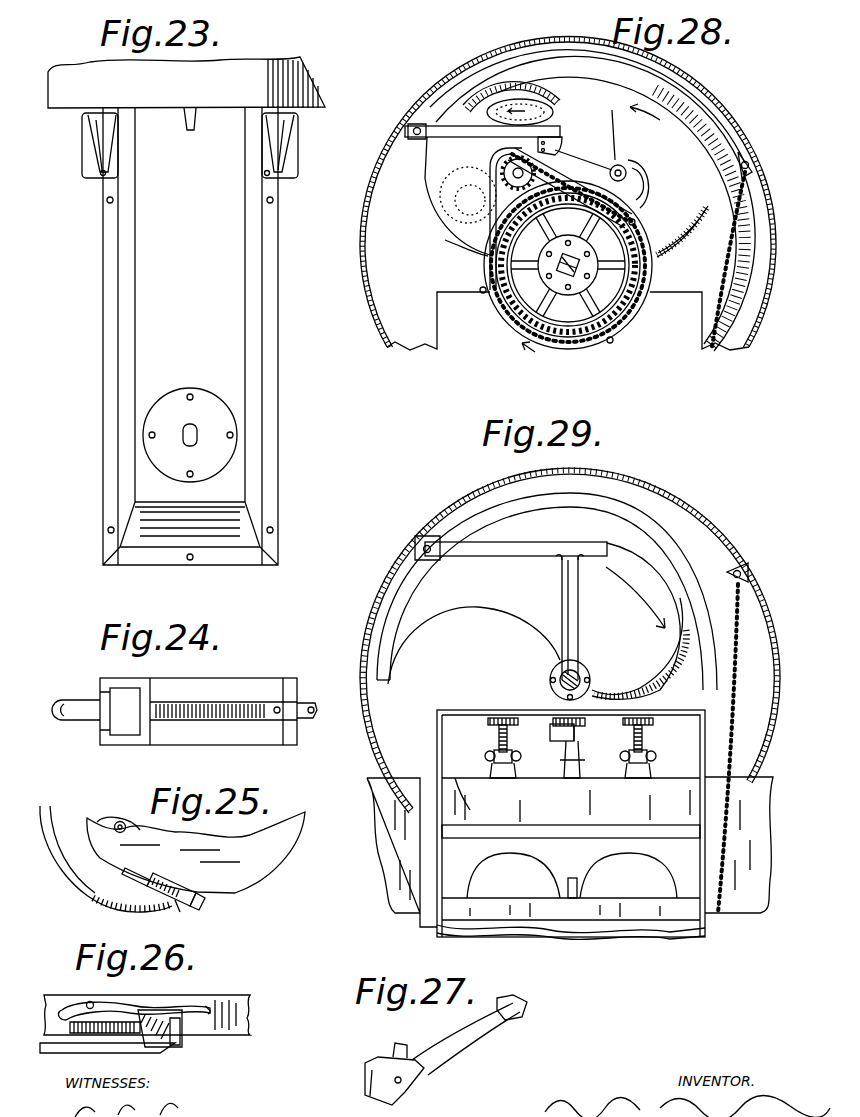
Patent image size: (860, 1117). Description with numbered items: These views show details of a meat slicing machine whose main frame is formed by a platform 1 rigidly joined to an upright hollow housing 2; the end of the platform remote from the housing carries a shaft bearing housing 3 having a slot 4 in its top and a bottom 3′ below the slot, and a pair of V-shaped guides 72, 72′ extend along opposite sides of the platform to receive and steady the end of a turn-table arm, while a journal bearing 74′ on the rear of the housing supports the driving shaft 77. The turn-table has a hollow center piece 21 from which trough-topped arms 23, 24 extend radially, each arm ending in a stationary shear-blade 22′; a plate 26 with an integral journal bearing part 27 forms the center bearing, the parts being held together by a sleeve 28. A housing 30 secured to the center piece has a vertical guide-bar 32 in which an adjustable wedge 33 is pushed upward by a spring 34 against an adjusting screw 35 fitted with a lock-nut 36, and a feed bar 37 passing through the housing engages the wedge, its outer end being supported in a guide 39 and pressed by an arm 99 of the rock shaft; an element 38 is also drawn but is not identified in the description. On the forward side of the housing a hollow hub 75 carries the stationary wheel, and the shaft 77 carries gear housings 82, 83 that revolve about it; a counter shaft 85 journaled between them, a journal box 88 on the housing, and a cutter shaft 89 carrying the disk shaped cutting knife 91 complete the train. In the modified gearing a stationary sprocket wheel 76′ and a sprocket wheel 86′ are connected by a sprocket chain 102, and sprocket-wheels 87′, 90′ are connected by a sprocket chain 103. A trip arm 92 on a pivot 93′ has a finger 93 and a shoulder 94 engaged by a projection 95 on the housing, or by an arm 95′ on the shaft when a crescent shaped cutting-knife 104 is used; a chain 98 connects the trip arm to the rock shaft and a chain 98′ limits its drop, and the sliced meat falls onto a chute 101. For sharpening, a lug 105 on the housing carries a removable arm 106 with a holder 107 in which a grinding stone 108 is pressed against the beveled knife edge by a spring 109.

In FIG. 23, the platform 1 is at (160, 310).
In FIG. 23, the upright hollow housing 2 is at (83, 82).
In FIG. 28, the upright hollow housing 2 is at (450, 82).
In FIG. 29, the upright hollow housing 2 is at (466, 495).
In FIG. 23, the shaft bearing housing 3 is at (165, 418).
In FIG. 23, the bottom 3′ is at (185, 442).
In FIG. 23, the slot 4 is at (197, 440).
In FIG. 23, the V-shaped guide 72 is at (292, 125).
In FIG. 23, the V-shaped guide 72′ is at (86, 125).
In FIG. 23, the journal bearing 74′ is at (193, 131).
In FIG. 24, the housing 30 is at (200, 680).
In FIG. 24, the vertical guide-bar 32 is at (122, 745).
In FIG. 24, the adjustable wedge 33 is at (108, 700).
In FIG. 24, the spring 34 is at (165, 722).
In FIG. 24, the feed bar 37 is at (313, 706).
In FIG. 24, the rod 38 is at (60, 710).
In FIG. 25, the gear housing 83 is at (265, 878).
In FIG. 26, the gear housing 83 is at (246, 1008).
In FIG. 28, the gear housing 83 is at (438, 213).
In FIG. 25, the disk shaped cutting knife 91 is at (70, 893).
In FIG. 26, the disk shaped cutting knife 91 is at (120, 1052).
In FIG. 28, the disk shaped cutting knife 91 is at (685, 128).
In FIG. 25, the journal box 88 is at (115, 823).
In FIG. 28, the journal box 88 is at (645, 183).
In FIG. 25, the cutter shaft 89 is at (132, 832).
In FIG. 28, the cutter shaft 89 is at (626, 170).
In FIG. 25, the lug 105 is at (150, 880).
In FIG. 26, the lug 105 is at (90, 1030).
In FIG. 25, the holder 107 is at (182, 890).
In FIG. 26, the holder 107 is at (178, 1040).
In FIG. 27, the holder 107 is at (365, 1080).
In FIG. 25, the grinding stone 108 is at (178, 906).
In FIG. 26, the grinding stone 108 is at (173, 1045).
In FIG. 25, the spring 109 is at (200, 902).
In FIG. 26, the spring 109 is at (198, 1008).
In FIG. 26, the arm 106 is at (108, 1008).
In FIG. 27, the arm 106 is at (462, 1040).
In FIG. 28, the sprocket-wheel 87′ is at (480, 103).
In FIG. 28, the sprocket chain 103 is at (508, 86).
In FIG. 28, the shoulder 94 is at (531, 126).
In FIG. 29, the shoulder 94 is at (560, 552).
In FIG. 28, the pivot 93′ is at (411, 146).
In FIG. 29, the pivot 93′ is at (432, 555).
In FIG. 28, the projection 95 is at (555, 135).
In FIG. 29, the arm 95′ is at (560, 600).
In FIG. 28, the finger 93 is at (607, 129).
In FIG. 29, the finger 93 is at (586, 563).
In FIG. 28, the sprocket wheel 90′ is at (618, 110).
In FIG. 28, the counter shaft 85 is at (470, 200).
In FIG. 28, the sprocket wheel 86′ is at (498, 235).
In FIG. 28, the sprocket chain 102 is at (482, 254).
In FIG. 28, the hollow hub 75 is at (570, 295).
In FIG. 28, the driving shaft 77 is at (572, 262).
In FIG. 29, the driving shaft 77 is at (560, 678).
In FIG. 28, the stationary sprocket wheel 76′ is at (618, 305).
In FIG. 28, the gear housing 82 is at (530, 340).
In FIG. 28, the trip arm 92 is at (720, 235).
In FIG. 29, the trip arm 92 is at (622, 543).
In FIG. 28, the chain or cord 98 is at (750, 295).
In FIG. 29, the chain or cord 98 is at (727, 715).
In FIG. 28, the chain 98′ is at (735, 240).
In FIG. 29, the chain 98′ is at (728, 632).
In FIG. 29, the crescent shaped cutting-knife 104 is at (660, 665).
In FIG. 29, the sleeve 28 is at (550, 735).
In FIG. 29, the hollow center piece 21 is at (571, 823).
In FIG. 29, the journal bearing part 27 is at (565, 752).
In FIG. 29, the adjusting screw 35 is at (646, 746).
In FIG. 29, the lock-nut 36 is at (655, 761).
In FIG. 29, the plate 26 is at (530, 778).
In FIG. 29, the stationary shear-blade 22′ is at (540, 818).
In FIG. 29, the arm 24 is at (395, 852).
In FIG. 29, the arm 23 is at (755, 845).
In FIG. 29, the arm 99 is at (566, 886).
In FIG. 29, the guide 39 is at (590, 876).
In FIG. 29, the chute 101 is at (660, 922).